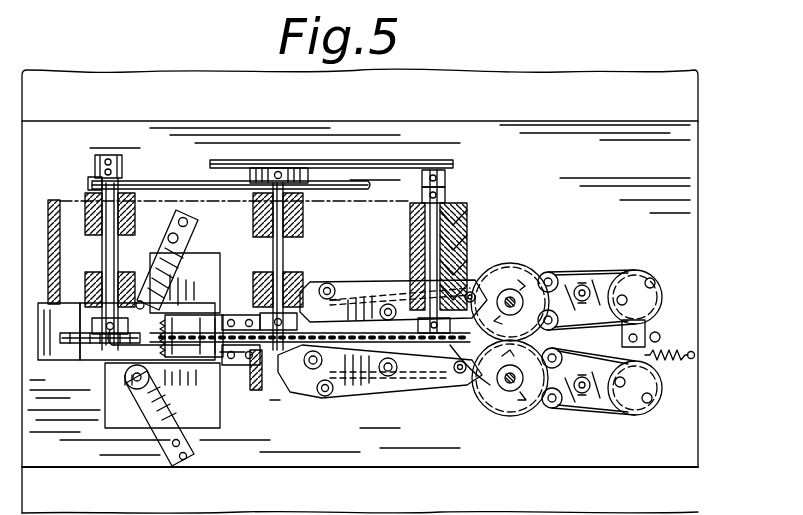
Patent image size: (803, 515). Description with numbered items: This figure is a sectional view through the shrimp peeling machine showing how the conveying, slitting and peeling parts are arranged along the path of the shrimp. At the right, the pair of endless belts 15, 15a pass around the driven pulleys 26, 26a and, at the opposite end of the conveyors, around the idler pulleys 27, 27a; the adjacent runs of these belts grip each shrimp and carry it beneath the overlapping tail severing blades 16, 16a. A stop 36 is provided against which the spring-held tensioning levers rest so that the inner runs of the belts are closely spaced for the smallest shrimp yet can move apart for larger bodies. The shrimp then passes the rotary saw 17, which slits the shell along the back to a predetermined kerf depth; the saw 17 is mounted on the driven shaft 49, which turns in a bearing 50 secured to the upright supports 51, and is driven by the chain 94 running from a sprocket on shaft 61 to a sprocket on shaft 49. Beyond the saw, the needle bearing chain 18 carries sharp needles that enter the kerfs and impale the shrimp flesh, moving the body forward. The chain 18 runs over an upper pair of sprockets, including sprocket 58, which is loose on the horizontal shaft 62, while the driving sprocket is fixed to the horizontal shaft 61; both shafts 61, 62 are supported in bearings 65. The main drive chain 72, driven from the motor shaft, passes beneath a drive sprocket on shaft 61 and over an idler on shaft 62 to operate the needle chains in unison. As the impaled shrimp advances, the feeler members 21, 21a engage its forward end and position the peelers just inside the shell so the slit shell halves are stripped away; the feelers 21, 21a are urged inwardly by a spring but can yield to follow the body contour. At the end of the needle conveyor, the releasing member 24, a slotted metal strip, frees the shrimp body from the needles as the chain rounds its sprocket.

The endless belt 15 is at (600, 270).
The endless belt 15a is at (588, 416).
The tail severing blade 16 is at (520, 268).
The tail severing blade 16a is at (505, 418).
The rotary saw 17 is at (445, 360).
The needle bearing chain 18 is at (262, 385).
The feeler member 21 is at (204, 300).
The feeler member 21a is at (194, 380).
The releasing member 24 is at (60, 360).
The pulley 26 is at (648, 268).
The pulley 26a is at (637, 416).
The idler pulley 27 is at (355, 300).
The idler pulley 27a is at (308, 392).
The stop 36 is at (660, 338).
The driven shaft 49 is at (430, 248).
The bearing 50 is at (470, 224).
The upright support 51 is at (460, 245).
The sprocket 58 is at (90, 345).
The horizontal shaft 61 is at (273, 248).
The horizontal shaft 62 is at (102, 240).
The bearing 65 is at (88, 200).
The chain 72 is at (196, 180).
The chain 94 is at (380, 162).